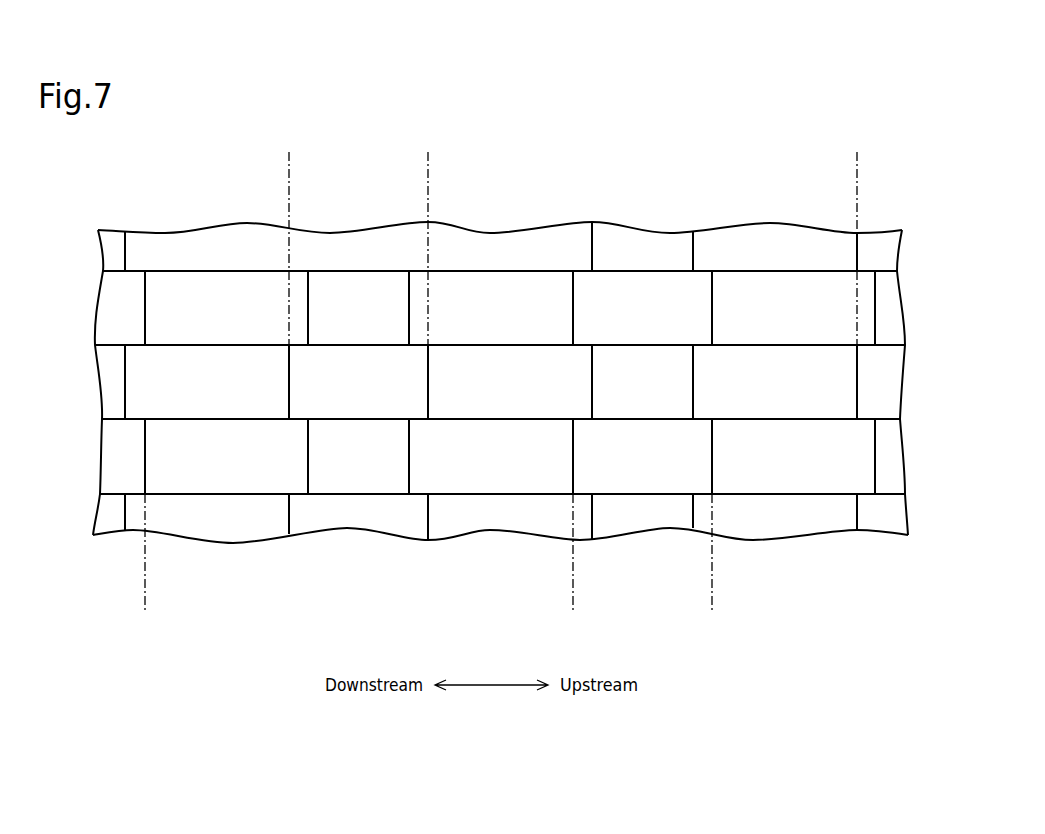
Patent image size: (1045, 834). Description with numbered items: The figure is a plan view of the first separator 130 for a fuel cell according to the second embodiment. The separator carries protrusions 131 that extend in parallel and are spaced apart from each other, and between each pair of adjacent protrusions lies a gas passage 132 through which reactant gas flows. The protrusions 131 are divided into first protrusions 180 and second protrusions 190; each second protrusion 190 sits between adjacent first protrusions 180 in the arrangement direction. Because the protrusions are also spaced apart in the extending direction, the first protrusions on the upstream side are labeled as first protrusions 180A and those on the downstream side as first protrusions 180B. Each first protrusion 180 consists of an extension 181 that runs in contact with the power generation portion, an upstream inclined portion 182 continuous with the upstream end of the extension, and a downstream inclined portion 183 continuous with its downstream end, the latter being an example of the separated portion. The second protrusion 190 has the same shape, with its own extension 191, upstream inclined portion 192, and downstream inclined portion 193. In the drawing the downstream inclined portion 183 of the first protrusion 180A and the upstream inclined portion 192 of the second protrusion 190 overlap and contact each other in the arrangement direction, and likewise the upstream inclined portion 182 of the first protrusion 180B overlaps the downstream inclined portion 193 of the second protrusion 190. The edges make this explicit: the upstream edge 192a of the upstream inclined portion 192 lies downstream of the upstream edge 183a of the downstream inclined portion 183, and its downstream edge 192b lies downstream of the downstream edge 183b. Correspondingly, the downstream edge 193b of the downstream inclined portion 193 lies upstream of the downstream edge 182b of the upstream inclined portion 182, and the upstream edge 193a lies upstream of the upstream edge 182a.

The first separator 130 is at (884, 118).
The protrusions 131 is at (500, 396).
The second protrusion 190 is at (93, 149).
The first protrusion 180 is at (526, 550).
The first protrusion on the upstream side 180A is at (712, 610).
The first protrusion on the downstream side 180B is at (145, 610).
The downstream inclined portion 183 is at (222, 283).
The extension 181 is at (355, 283).
The upstream inclined portion 182 is at (500, 283).
The gas passage 132 is at (639, 283).
The upstream inclined portion 192 is at (215, 405).
The downstream inclined portion 193 is at (498, 405).
The extension 191 is at (640, 405).
The upstream edge 193a is at (591, 370).
The downstream edge 193b is at (426, 370).
The upstream edge 192a is at (857, 358).
The downstream edge 192b is at (694, 370).
The upstream edge 183a is at (874, 443).
The downstream edge 183b is at (711, 443).
The upstream edge 182a is at (575, 459).
The downstream edge 182b is at (411, 459).